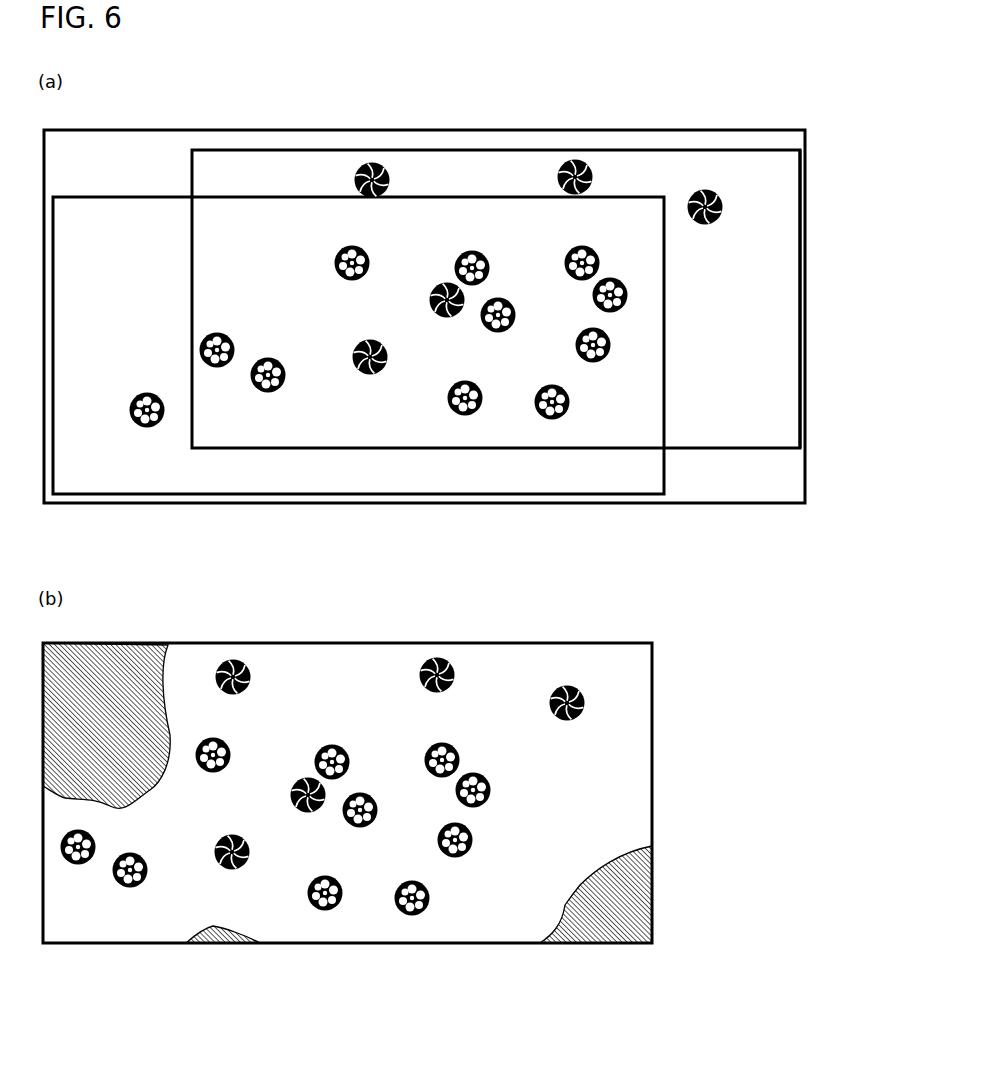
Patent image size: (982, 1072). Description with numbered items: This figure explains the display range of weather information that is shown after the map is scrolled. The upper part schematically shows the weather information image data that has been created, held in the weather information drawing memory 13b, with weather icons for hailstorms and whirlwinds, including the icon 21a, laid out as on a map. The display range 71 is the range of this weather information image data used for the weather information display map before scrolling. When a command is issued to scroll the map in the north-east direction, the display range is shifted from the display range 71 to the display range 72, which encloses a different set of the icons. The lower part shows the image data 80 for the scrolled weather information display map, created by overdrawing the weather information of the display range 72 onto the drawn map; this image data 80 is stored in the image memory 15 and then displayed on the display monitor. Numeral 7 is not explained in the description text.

The photosensitive drum 7 is at (780, 189).
The weather information drawing memory 13b is at (749, 112).
The image memory 15 is at (614, 620).
The display range 71 is at (133, 197).
The display range 72 is at (237, 150).
The image data 80 is at (633, 675).
The toner particle 21a is at (129, 410).